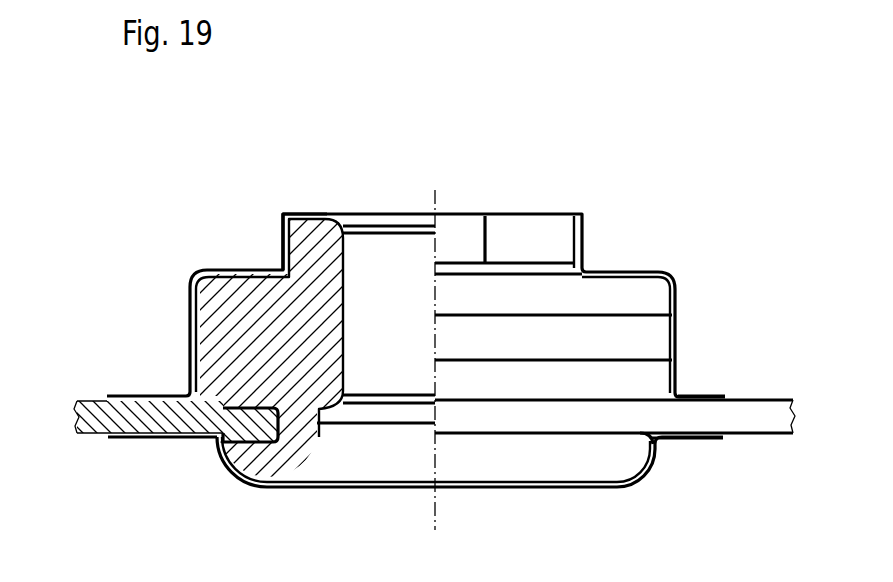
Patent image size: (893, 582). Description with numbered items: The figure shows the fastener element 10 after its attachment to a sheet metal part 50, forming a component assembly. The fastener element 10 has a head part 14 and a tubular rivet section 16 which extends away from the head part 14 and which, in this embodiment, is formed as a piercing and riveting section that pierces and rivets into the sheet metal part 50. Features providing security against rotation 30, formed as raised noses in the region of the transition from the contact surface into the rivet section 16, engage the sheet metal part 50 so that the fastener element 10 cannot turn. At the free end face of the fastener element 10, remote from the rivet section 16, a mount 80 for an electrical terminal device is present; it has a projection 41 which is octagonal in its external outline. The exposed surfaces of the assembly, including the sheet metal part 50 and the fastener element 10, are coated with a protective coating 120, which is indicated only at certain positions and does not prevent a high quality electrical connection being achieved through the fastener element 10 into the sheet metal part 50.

The fastener element 10 is at (191, 330).
The head part 14 is at (680, 333).
The rivet section 16 is at (237, 487).
The features providing security against rotation 30 is at (223, 427).
The projection 41 is at (285, 232).
The sheet metal part 50 is at (740, 435).
The mount 80 is at (588, 238).
The protective coating 120 is at (708, 395).